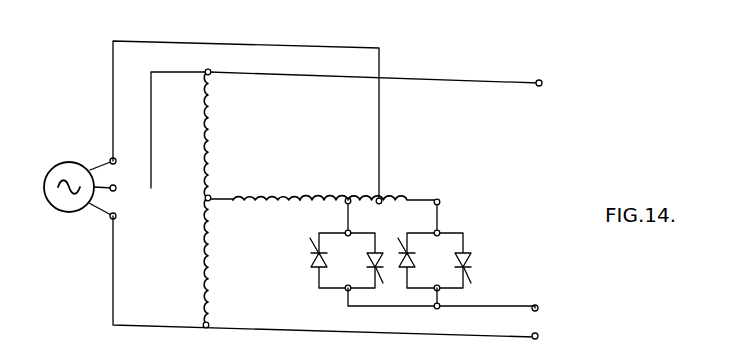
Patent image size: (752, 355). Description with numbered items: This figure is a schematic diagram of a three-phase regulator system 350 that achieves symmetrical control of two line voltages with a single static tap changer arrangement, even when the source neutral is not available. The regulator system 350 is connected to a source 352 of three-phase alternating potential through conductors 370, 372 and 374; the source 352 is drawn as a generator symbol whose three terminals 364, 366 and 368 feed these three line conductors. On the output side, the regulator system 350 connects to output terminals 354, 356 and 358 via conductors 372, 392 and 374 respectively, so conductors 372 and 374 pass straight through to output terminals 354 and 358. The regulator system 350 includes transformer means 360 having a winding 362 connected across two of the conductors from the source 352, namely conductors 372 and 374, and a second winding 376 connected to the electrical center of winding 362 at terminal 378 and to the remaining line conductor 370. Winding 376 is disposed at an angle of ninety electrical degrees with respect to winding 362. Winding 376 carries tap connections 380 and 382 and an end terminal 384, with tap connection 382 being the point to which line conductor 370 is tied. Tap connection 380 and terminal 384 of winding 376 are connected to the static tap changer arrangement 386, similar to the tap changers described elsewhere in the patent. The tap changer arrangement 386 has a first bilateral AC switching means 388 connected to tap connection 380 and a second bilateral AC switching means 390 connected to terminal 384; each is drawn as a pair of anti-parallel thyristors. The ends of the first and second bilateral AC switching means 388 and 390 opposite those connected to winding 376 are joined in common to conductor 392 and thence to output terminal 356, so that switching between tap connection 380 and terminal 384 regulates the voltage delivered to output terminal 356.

The regulator system 350 is at (97, 93).
The source 352 is at (62, 164).
The output terminal 354 is at (552, 73).
The output terminal 356 is at (538, 305).
The output terminal 358 is at (538, 333).
The transformer means 360 is at (255, 168).
The winding 362 is at (208, 269).
The generator terminal 364 is at (110, 158).
The generator terminal 366 is at (118, 190).
The generator terminal 368 is at (118, 218).
The conductor 370 is at (190, 41).
The conductor 372 is at (191, 70).
The conductor 374 is at (184, 323).
The winding 376 is at (298, 201).
The terminal 378 is at (209, 201).
The tap connection 380 is at (325, 214).
The tap connection 382 is at (381, 199).
The terminal 384 is at (439, 200).
The static tap changer arrangement 386 is at (412, 228).
The first bilateral AC switching means 388 is at (367, 256).
The second bilateral AC switching means 390 is at (457, 256).
The conductor 392 is at (486, 306).